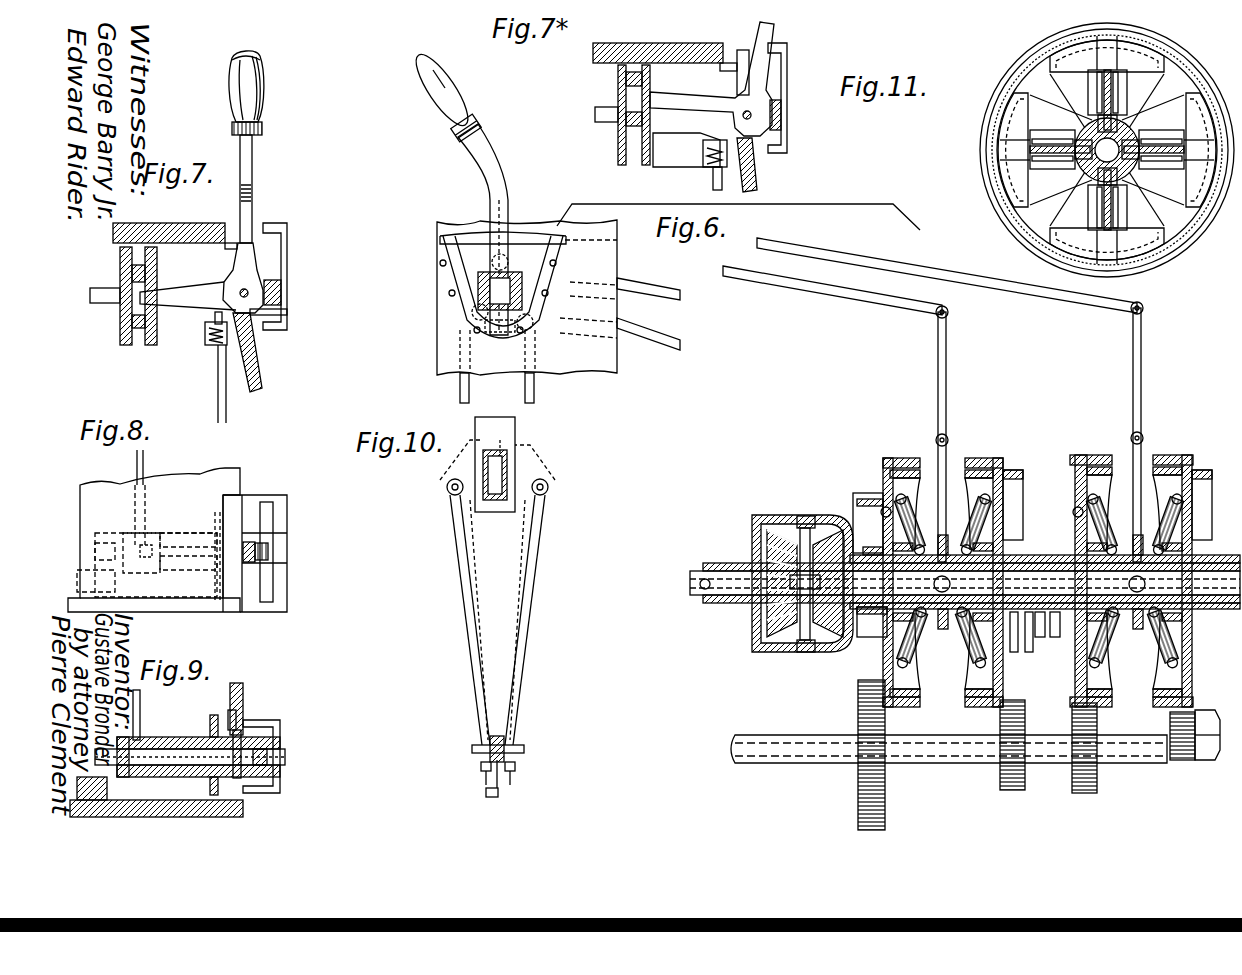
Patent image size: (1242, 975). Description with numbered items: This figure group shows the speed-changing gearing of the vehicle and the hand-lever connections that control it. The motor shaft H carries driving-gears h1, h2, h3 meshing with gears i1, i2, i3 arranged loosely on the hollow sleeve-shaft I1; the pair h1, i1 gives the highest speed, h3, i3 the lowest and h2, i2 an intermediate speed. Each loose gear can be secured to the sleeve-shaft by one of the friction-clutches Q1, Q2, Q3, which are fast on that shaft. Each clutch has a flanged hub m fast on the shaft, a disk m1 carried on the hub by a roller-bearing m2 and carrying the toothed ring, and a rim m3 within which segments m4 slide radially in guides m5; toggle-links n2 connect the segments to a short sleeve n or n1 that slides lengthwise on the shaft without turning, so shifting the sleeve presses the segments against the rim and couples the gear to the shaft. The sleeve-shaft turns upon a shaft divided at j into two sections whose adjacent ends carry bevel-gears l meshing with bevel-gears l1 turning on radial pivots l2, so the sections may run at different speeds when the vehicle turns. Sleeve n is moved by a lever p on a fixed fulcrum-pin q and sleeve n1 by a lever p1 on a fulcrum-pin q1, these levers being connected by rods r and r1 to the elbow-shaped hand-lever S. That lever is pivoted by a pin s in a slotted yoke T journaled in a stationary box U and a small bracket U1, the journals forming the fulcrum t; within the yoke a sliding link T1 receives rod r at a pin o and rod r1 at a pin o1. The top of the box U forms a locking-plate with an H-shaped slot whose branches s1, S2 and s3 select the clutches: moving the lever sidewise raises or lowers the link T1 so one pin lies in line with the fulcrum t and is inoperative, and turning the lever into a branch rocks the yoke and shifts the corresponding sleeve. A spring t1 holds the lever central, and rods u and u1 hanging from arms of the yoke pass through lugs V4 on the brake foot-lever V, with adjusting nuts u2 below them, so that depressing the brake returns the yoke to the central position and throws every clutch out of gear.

The hand-lever S is at (712, 72).
In FIG. 7, the hand-lever S is at (202, 182).
In FIG. 10, the hand-lever S is at (510, 455).
The pin s is at (743, 115).
In FIG. 7, the pin s is at (240, 293).
In FIG. 8, the pin s is at (268, 540).
In FIG. 9, the pin s is at (280, 750).
In FIG. 10, the pin s is at (475, 308).
The branch of H-shaped slot S2 is at (722, 50).
In FIG. 7, the branch of H-shaped slot S2 is at (230, 228).
In FIG. 8, the branch of H-shaped slot S2 is at (218, 512).
In FIG. 10, the branch of H-shaped slot S2 is at (455, 236).
In FIG. 8, the branch of H-shaped slot s1 is at (232, 585).
In FIG. 8, the branch of H-shaped slot s3 is at (270, 590).
The stationary box U is at (790, 98).
In FIG. 7, the stationary box U is at (277, 276).
In FIG. 8, the stationary box U is at (264, 553).
In FIG. 9, the stationary box U is at (269, 751).
In FIG. 10, the stationary box U is at (548, 320).
In FIG. 8, the small bracket U1 is at (100, 582).
In FIG. 9, the small bracket U1 is at (90, 798).
The fulcrum-pivot t is at (787, 115).
In FIG. 7, the fulcrum-pivot t is at (283, 293).
In FIG. 8, the fulcrum-pivot t is at (95, 550).
In FIG. 9, the fulcrum-pivot t is at (280, 757).
In FIG. 10, the fulcrum-pivot t is at (470, 300).
The spring t1 is at (704, 155).
In FIG. 7, the spring t1 is at (206, 340).
In FIG. 10, the spring t1 is at (497, 505).
The slotted yoke T is at (669, 116).
In FIG. 7, the slotted yoke T is at (158, 296).
In FIG. 8, the slotted yoke T is at (238, 570).
In FIG. 9, the slotted yoke T is at (180, 740).
In FIG. 10, the slotted yoke T is at (478, 300).
The sliding link T1 is at (620, 128).
In FIG. 7, the sliding link T1 is at (124, 312).
In FIG. 8, the sliding link T1 is at (130, 533).
In FIG. 9, the sliding link T1 is at (150, 748).
In FIG. 10, the sliding link T1 is at (490, 250).
The rod r is at (622, 140).
In FIG. 7, the rod r is at (150, 322).
In FIG. 10, the rod r is at (620, 295).
In FIG. 6, the rod r is at (832, 290).
The rod r1 is at (620, 82).
In FIG. 7, the rod r1 is at (124, 266).
In FIG. 8, the rod r1 is at (136, 470).
In FIG. 9, the rod r1 is at (144, 706).
The pin o is at (650, 117).
In FIG. 7, the pin o is at (128, 322).
In FIG. 10, the pin o is at (500, 335).
The pin o1 is at (650, 82).
In FIG. 7, the pin o1 is at (146, 282).
In FIG. 10, the pin o1 is at (520, 268).
In FIG. 9, the rod u is at (298, 810).
In FIG. 10, the rod u is at (463, 537).
The rod u1 is at (714, 178).
In FIG. 7, the rod u1 is at (211, 384).
In FIG. 10, the rod u1 is at (532, 537).
In FIG. 10, the nut u2 is at (481, 770).
In FIG. 10, the foot-lever V is at (499, 785).
In FIG. 10, the lug V4 is at (478, 748).
In FIG. 6, the lever p is at (946, 350).
In FIG. 10, the lever p1 is at (625, 287).
In FIG. 6, the lever p1 is at (950, 400).
In FIG. 6, the fulcrum-pin q is at (947, 436).
In FIG. 6, the fulcrum-pin q1 is at (1141, 434).
In FIG. 11, the friction-clutch Q1 is at (1192, 58).
In FIG. 6, the friction-clutch Q1 is at (901, 568).
In FIG. 6, the friction-clutch Q2 is at (994, 570).
In FIG. 6, the friction-clutch Q3 is at (1094, 561).
In FIG. 6, the gear i1 is at (865, 551).
In FIG. 6, the gear i2 is at (1011, 445).
In FIG. 6, the gear i3 is at (1066, 433).
In FIG. 11, the intermediate shaft I1 is at (1090, 128).
In FIG. 6, the intermediate shaft I1 is at (715, 598).
In FIG. 6, the division of shaft j is at (765, 598).
In FIG. 6, the bevel-gear l is at (752, 556).
In FIG. 6, the bevel-gear l1 is at (782, 530).
In FIG. 6, the radial pivot l2 is at (806, 516).
In FIG. 6, the flanged hub m is at (1045, 582).
In FIG. 6, the disk m1 is at (1045, 638).
In FIG. 11, the roller-bearing m2 is at (1107, 101).
In FIG. 6, the roller-bearing m2 is at (957, 633).
In FIG. 11, the rim m3 is at (1000, 165).
In FIG. 6, the rim m3 is at (1044, 705).
In FIG. 11, the segment m4 is at (1165, 275).
In FIG. 6, the segment m4 is at (1020, 581).
In FIG. 11, the guide m5 is at (1040, 80).
In FIG. 6, the sleeve n is at (1037, 593).
In FIG. 6, the sleeve n1 is at (1069, 581).
In FIG. 11, the toggle-link n2 is at (1107, 199).
In FIG. 6, the toggle-link n2 is at (1024, 654).
In FIG. 6, the motor-shaft H is at (778, 745).
In FIG. 6, the gear h1 is at (858, 780).
In FIG. 6, the gear h2 is at (1002, 765).
In FIG. 6, the gear h3 is at (1085, 780).